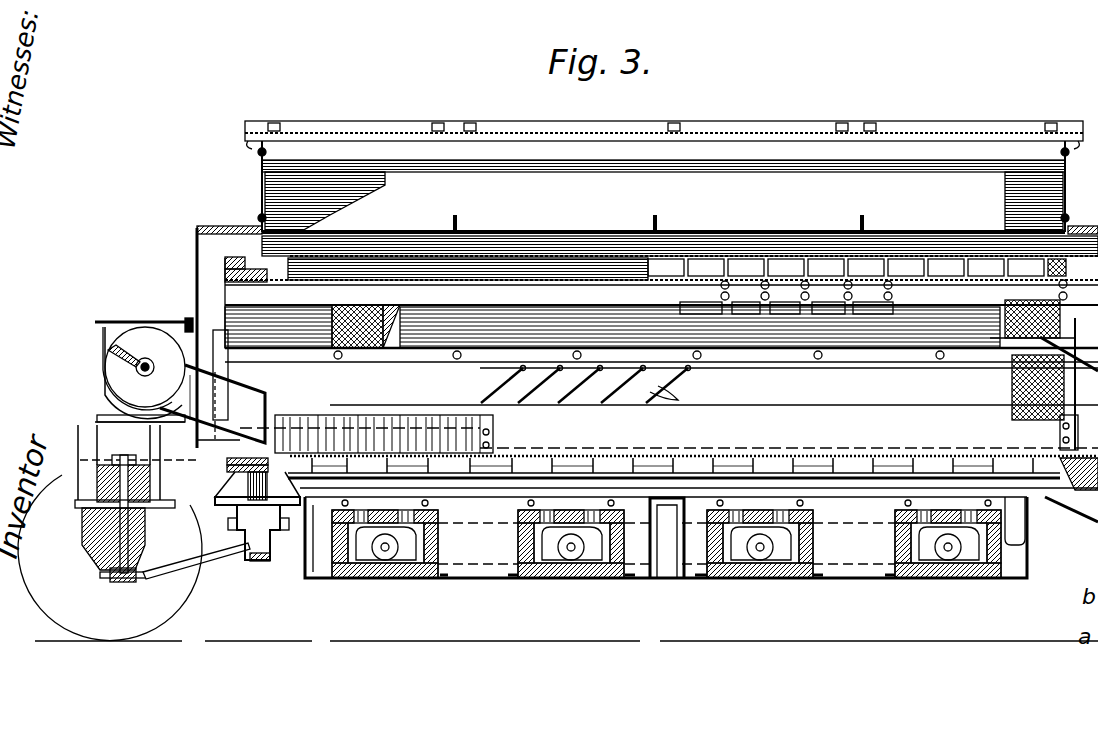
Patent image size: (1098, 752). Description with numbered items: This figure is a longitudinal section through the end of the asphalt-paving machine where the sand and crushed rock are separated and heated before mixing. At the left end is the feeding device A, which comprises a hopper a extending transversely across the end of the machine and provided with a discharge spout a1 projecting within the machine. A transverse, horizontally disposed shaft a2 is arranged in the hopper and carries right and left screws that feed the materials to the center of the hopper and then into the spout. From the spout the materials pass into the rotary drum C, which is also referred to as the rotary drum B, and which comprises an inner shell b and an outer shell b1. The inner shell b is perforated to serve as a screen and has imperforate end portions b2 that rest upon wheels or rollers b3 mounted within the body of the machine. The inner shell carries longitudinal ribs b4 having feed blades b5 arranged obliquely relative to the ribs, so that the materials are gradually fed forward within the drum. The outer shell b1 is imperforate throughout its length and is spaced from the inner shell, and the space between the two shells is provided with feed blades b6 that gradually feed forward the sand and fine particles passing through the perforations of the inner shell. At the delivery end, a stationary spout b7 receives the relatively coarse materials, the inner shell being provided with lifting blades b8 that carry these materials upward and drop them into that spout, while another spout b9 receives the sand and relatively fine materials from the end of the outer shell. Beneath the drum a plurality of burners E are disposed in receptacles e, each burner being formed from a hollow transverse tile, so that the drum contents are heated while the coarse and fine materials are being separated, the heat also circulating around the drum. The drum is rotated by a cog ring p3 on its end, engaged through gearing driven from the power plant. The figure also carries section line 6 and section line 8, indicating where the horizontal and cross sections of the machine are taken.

The cog ring p3 is at (232, 282).
The rotary drum C is at (200, 228).
The feeding device A is at (117, 337).
The hopper a is at (135, 322).
The shaft a2 is at (135, 366).
The discharge spout a1 is at (220, 418).
The section line 6- 6 is at (100, 328).
The section line 8- 8 is at (383, 91).
The imperforate end portions b2 is at (228, 462).
The wheels or rollers b3 is at (245, 480).
The burners E is at (375, 543).
The receptacles e is at (482, 578).
The feed blades b6 is at (693, 460).
The rotary drum B is at (893, 405).
The inner shell b is at (773, 450).
The outer shell b1 is at (717, 474).
The longitudinal ribs b4 is at (865, 353).
The feed blades b5 is at (599, 385).
The stationary spout b7 is at (985, 328).
The lifting blades b8 is at (1060, 392).
The spout b9 is at (1058, 480).